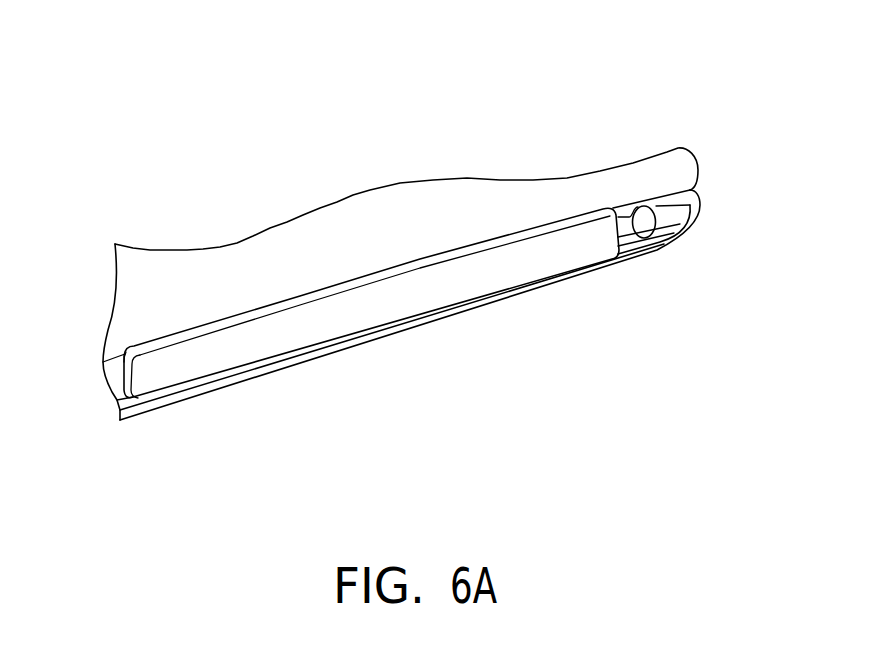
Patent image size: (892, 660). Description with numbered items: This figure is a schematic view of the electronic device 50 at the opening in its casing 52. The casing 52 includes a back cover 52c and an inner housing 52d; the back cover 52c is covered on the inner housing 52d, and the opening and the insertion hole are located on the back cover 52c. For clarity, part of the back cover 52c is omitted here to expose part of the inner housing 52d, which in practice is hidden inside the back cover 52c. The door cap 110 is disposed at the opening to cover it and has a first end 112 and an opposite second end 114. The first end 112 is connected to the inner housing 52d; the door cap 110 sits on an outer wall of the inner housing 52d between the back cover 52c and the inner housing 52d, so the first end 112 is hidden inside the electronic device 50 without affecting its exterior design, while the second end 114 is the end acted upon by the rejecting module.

The electronic device 50 is at (752, 506).
The casing 52 is at (521, 163).
The back cover 52c is at (582, 187).
The inner housing 52d is at (669, 203).
The door cap 110 is at (393, 303).
The first end 112 is at (652, 226).
The second end 114 is at (178, 372).